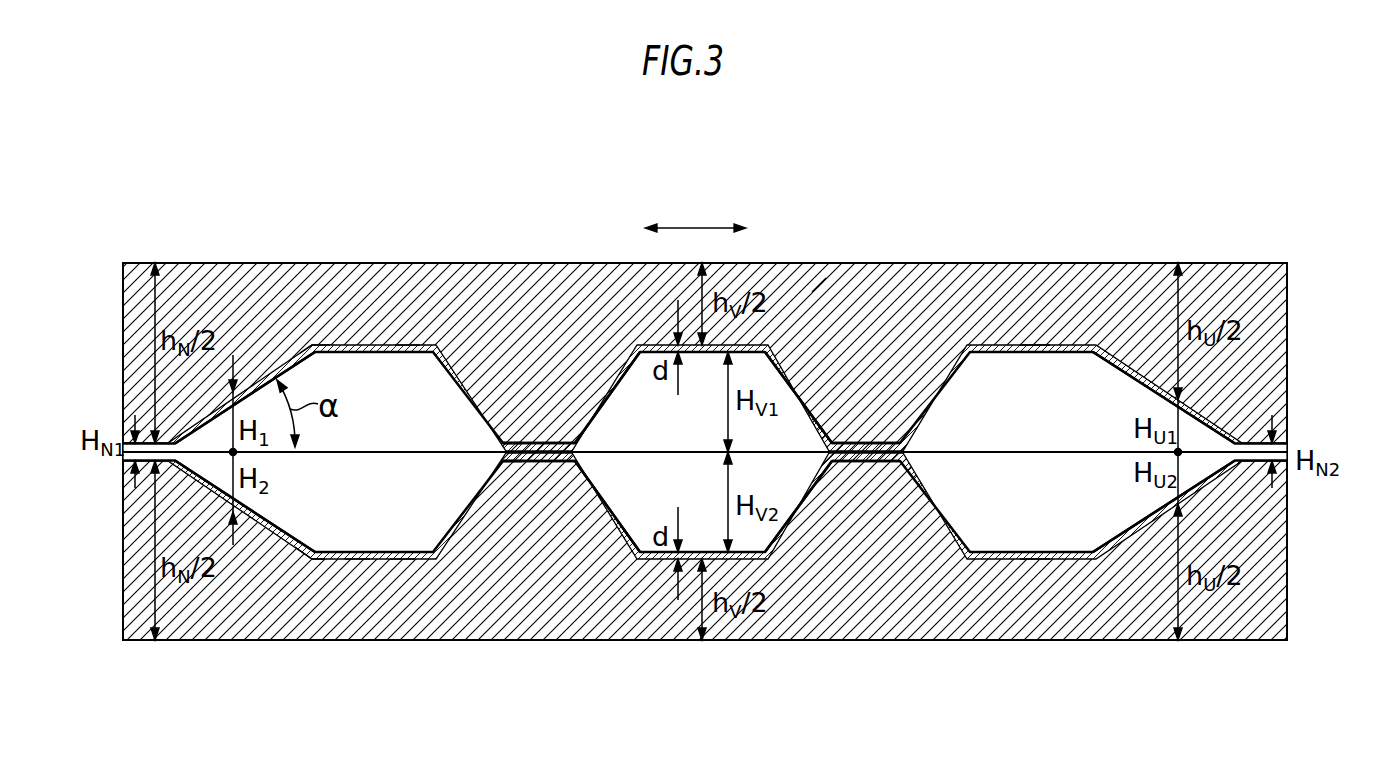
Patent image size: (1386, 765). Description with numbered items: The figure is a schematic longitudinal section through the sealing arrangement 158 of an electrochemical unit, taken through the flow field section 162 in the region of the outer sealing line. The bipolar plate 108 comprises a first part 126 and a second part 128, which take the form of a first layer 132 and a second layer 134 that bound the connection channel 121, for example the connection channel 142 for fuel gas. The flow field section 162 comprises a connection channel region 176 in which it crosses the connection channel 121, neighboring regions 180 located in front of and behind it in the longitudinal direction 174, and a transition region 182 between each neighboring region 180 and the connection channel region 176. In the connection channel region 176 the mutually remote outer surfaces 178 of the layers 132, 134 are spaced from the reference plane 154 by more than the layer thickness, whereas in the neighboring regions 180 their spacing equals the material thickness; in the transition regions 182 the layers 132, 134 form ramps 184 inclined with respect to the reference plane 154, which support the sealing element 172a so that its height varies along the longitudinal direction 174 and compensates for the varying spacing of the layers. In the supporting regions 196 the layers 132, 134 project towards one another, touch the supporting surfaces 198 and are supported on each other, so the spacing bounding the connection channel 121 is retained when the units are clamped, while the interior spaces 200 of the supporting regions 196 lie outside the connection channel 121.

The bipolar plate 108 is at (308, 578).
The connection channel 121 is at (380, 421).
The first part 126 is at (340, 347).
The second part 128 is at (356, 560).
The first layer 132 is at (407, 350).
The second layer 134 is at (400, 558).
The connection channel for fuel gas 142 is at (380, 503).
The reference plane 154 is at (1036, 452).
The sealing arrangement 158 is at (1238, 252).
The flow field section 162 is at (1291, 252).
The sealing element 172a is at (820, 285).
The longitudinal direction 174 is at (693, 228).
The connection channel region 176 is at (345, 250).
The outer surfaces 178 is at (1035, 345).
The neighboring regions 180 is at (130, 250).
The transition region 182 is at (208, 250).
The ramps 184 is at (266, 380).
The supporting regions 196 is at (571, 418).
The supporting surfaces 198 is at (532, 440).
The interior spaces 200 is at (520, 408).